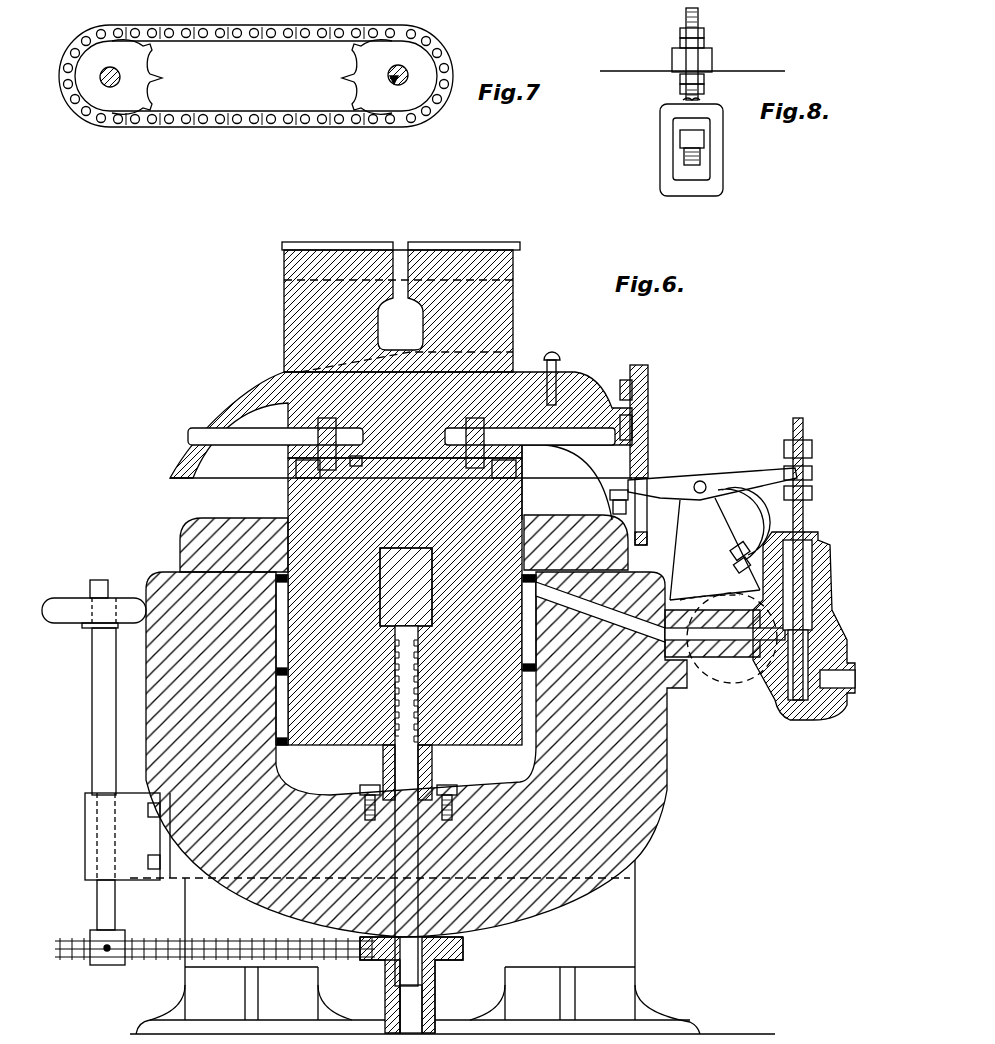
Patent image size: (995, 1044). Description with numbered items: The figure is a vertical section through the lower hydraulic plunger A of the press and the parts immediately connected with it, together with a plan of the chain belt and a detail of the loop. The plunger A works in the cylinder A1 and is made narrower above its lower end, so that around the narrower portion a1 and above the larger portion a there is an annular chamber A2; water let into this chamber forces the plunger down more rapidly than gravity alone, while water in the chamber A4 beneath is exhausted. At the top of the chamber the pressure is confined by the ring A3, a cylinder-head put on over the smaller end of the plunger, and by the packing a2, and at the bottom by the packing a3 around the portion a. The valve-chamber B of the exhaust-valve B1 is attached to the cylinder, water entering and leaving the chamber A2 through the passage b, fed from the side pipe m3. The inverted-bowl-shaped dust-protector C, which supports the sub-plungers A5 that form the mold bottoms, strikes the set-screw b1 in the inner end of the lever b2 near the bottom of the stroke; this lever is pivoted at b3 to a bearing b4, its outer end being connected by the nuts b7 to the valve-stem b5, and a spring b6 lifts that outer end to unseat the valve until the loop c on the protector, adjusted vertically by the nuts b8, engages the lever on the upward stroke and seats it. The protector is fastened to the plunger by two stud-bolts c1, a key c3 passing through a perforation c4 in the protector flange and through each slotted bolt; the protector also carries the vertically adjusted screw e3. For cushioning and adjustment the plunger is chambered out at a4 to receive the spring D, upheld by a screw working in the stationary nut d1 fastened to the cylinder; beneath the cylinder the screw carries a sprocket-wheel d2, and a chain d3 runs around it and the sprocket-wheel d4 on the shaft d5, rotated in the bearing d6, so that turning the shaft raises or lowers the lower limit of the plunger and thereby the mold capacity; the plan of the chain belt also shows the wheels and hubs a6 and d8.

In FIG. 6, the lower plunger A is at (370, 535).
In FIG. 6, the cylinder A1 is at (160, 572).
In FIG. 6, the annular chamber A2 is at (262, 635).
In FIG. 6, the ring A3 is at (210, 520).
In FIG. 6, the chamber A4 is at (355, 780).
In FIG. 6, the sub-plungers A5 is at (280, 270).
In FIG. 7, the lower portion of plunger a is at (394, 67).
In FIG. 6, the lower portion of plunger a is at (276, 705).
In FIG. 6, the narrower portion of plunger a1 is at (470, 584).
In FIG. 7, the packing a2 is at (376, 77).
In FIG. 6, the packing a2 is at (345, 470).
In FIG. 7, the packing a3 is at (236, 120).
In FIG. 6, the packing a3 is at (538, 660).
In FIG. 7, the chamber in plunger a4 is at (137, 77).
In FIG. 6, the chamber in plunger a4 is at (350, 636).
In FIG. 7, the shaft hub a6 is at (105, 68).
In FIG. 6, the valve-chamber B is at (828, 582).
In FIG. 6, the exhaust-valve B1 is at (832, 608).
In FIG. 6, the passage b is at (620, 625).
In FIG. 6, the set-screw b1 is at (608, 486).
In FIG. 6, the lever b2 is at (682, 478).
In FIG. 6, the pivot b3 is at (703, 482).
In FIG. 6, the bearing b4 is at (715, 549).
In FIG. 6, the valve-stem b5 is at (800, 425).
In FIG. 6, the spring b6 is at (744, 530).
In FIG. 6, the nuts b7 is at (812, 462).
In FIG. 6, the nuts b8 is at (650, 428).
In FIG. 8, the dust-protector C is at (692, 61).
In FIG. 6, the dust-protector C is at (401, 446).
In FIG. 8, the loop c is at (699, 102).
In FIG. 6, the loop c is at (648, 522).
In FIG. 6, the stud-bolts c1 is at (330, 425).
In FIG. 6, the key c3 is at (258, 450).
In FIG. 6, the perforation c4 is at (212, 450).
In FIG. 6, the spring D is at (406, 587).
In FIG. 6, the stationary nut d1 is at (432, 768).
In FIG. 6, the sprocket-wheel d2 is at (438, 958).
In FIG. 6, the chain d3 is at (215, 940).
In FIG. 6, the sprocket-wheel d4 is at (122, 940).
In FIG. 6, the shaft d5 is at (110, 668).
In FIG. 6, the bearing d6 is at (96, 842).
In FIG. 6, the bolt d8 is at (368, 825).
In FIG. 6, the knob e3 is at (560, 357).
In FIG. 6, the side pipe m3 is at (735, 660).